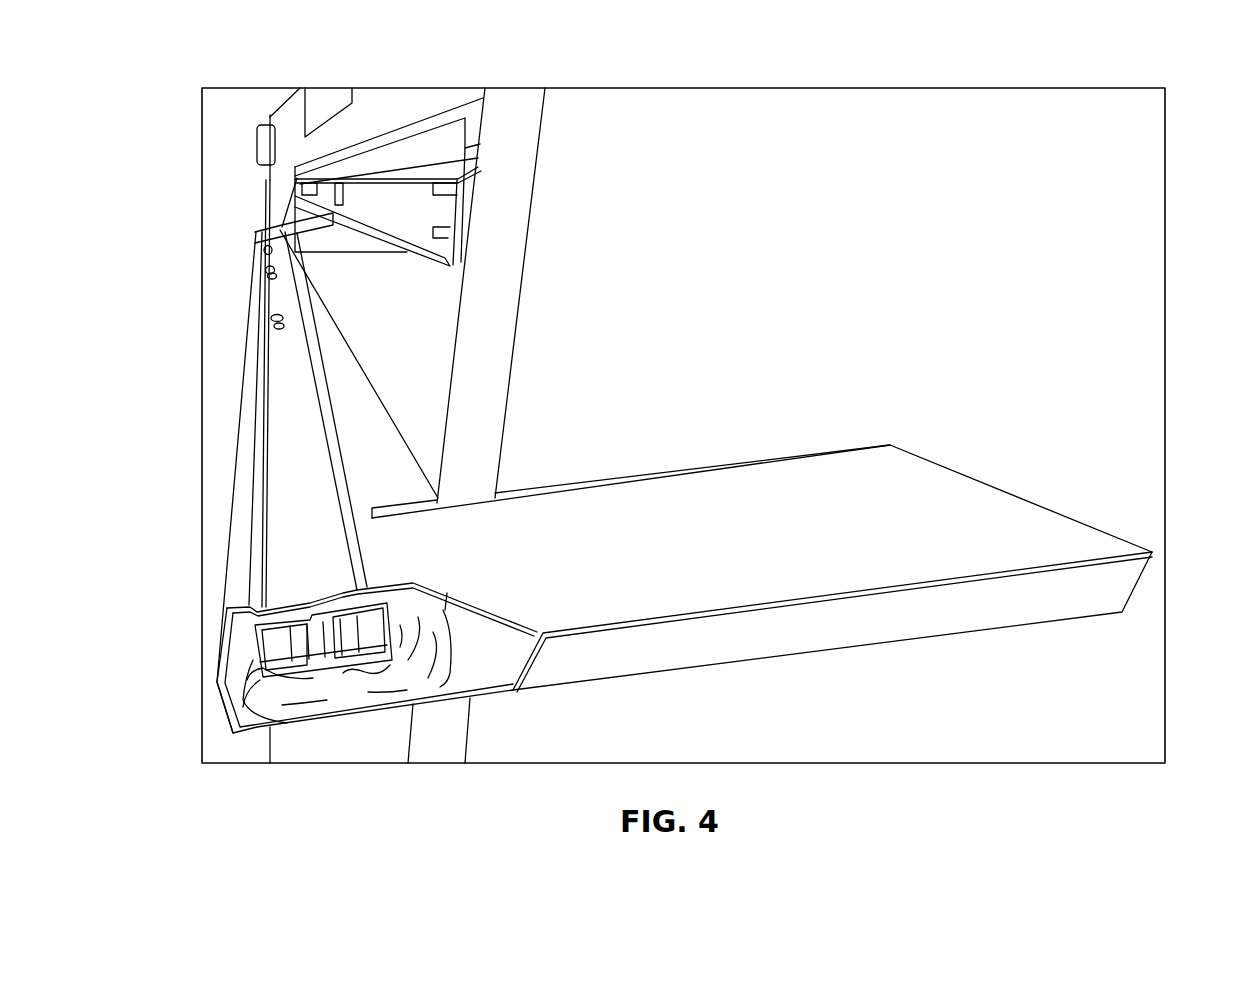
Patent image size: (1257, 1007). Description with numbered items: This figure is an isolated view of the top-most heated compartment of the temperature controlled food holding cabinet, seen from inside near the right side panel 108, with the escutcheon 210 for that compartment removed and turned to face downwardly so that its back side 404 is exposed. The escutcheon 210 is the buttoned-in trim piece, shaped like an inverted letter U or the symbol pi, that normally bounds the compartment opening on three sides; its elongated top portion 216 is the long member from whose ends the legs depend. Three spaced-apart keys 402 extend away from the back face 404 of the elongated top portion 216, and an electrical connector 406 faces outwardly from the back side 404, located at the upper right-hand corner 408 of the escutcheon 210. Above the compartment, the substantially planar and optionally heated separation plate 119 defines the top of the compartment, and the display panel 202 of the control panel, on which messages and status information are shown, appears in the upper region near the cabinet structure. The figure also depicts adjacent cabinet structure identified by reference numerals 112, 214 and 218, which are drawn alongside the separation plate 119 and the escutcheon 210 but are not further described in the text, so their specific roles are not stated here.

The right side panel 108 is at (1138, 312).
The support post 112 is at (425, 210).
The separation plate 119 is at (455, 248).
The display panel 202 is at (333, 100).
The escutcheon 210 is at (697, 498).
The upper mounting arm 214 is at (347, 190).
The elongated top portion 216 is at (225, 565).
The front edge of table 218 is at (1040, 600).
The keys 402 is at (262, 251).
The back side of escutcheon 404 is at (287, 467).
The electrical connector 406 is at (345, 668).
The upper right-hand corner 408 is at (170, 753).